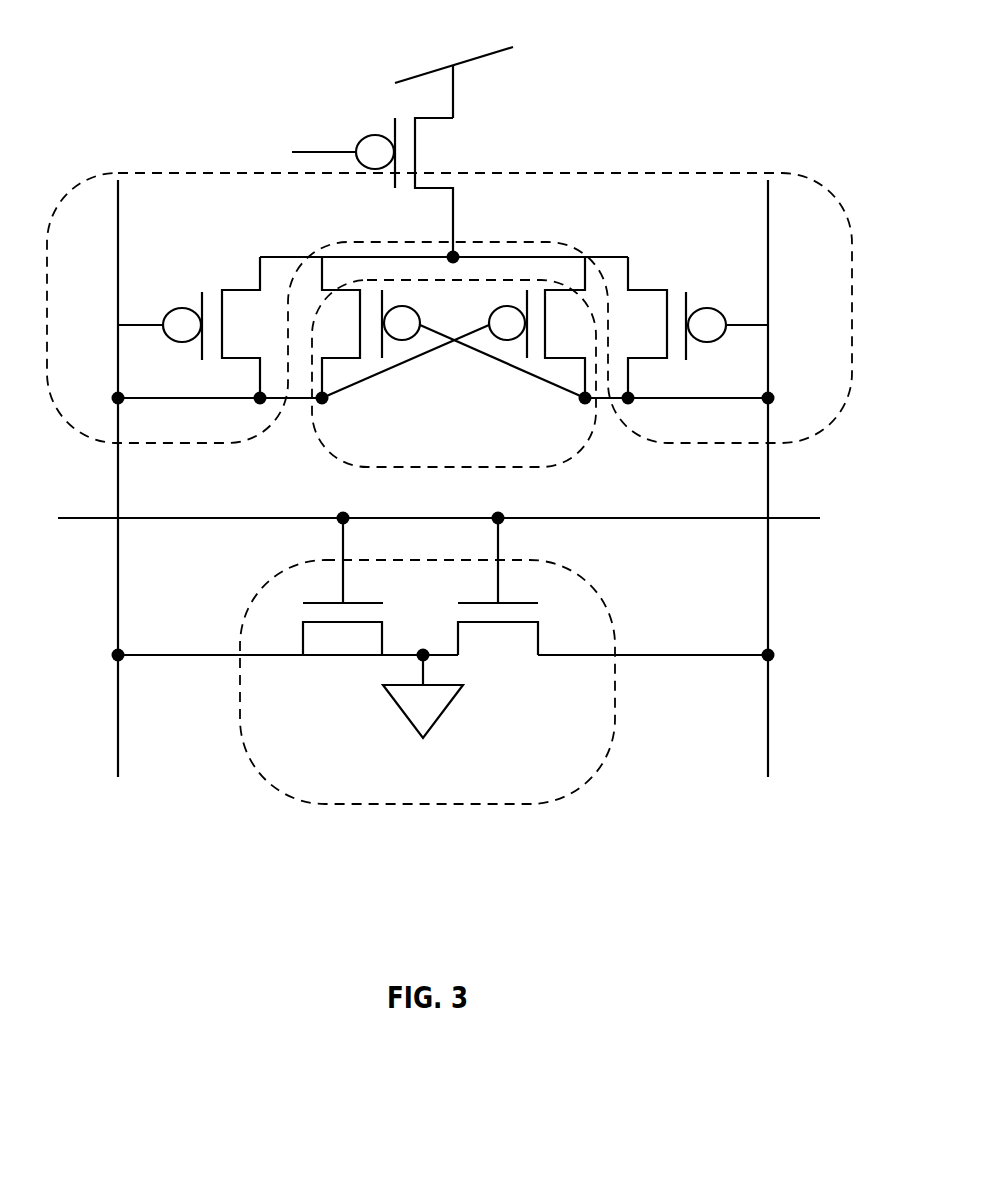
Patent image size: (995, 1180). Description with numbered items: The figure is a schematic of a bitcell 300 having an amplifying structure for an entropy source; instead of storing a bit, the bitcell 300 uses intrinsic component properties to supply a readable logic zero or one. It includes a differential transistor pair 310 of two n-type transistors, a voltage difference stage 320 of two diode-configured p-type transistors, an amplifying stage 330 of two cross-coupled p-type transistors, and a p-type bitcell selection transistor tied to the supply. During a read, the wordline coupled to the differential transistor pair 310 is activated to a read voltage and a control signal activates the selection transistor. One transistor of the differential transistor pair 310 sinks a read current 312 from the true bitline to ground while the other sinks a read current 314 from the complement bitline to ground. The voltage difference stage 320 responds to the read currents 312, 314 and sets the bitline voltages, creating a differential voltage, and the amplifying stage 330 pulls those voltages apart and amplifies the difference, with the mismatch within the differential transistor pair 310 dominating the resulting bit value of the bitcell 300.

The bitcell 300 is at (752, 52).
The differential transistor pair 310 is at (543, 803).
The read current 312 is at (197, 655).
The read current 314 is at (682, 657).
The voltage difference stage 320 is at (777, 442).
The amplifying stage 330 is at (527, 467).